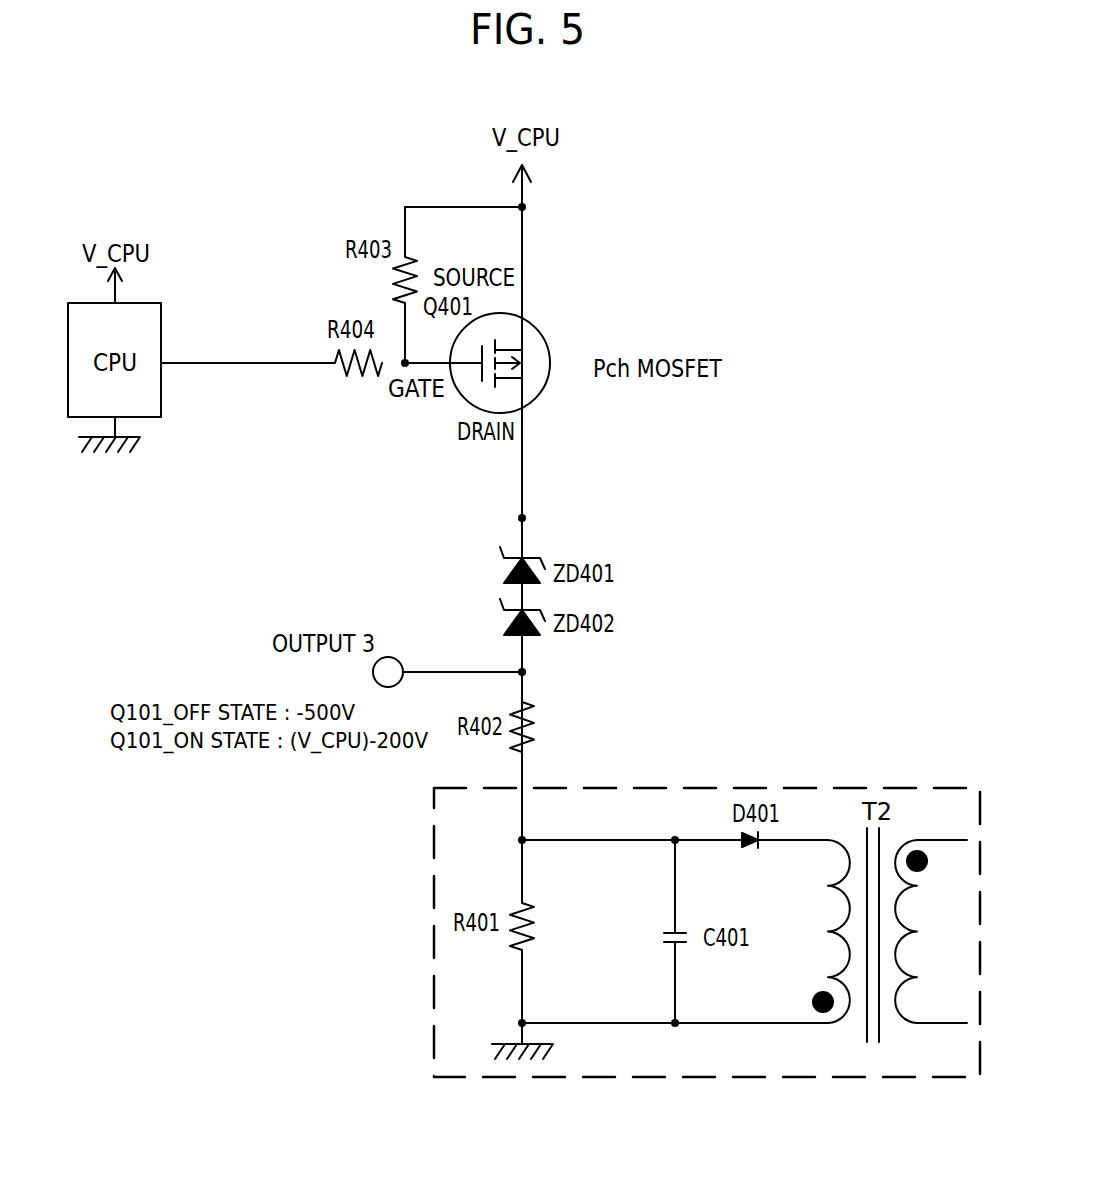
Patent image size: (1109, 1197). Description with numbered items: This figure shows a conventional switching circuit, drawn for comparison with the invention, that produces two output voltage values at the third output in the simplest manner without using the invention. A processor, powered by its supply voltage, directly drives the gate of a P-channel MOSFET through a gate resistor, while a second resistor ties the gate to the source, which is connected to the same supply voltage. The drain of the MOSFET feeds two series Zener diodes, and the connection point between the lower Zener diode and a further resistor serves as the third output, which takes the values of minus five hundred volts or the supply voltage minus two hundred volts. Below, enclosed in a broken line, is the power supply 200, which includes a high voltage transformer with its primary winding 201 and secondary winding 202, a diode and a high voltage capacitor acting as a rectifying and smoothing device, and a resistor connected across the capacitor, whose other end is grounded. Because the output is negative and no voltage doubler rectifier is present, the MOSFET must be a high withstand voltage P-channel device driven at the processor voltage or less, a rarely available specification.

The power supply 200 is at (650, 786).
The primary winding 201 is at (937, 840).
The secondary winding 202 is at (812, 840).